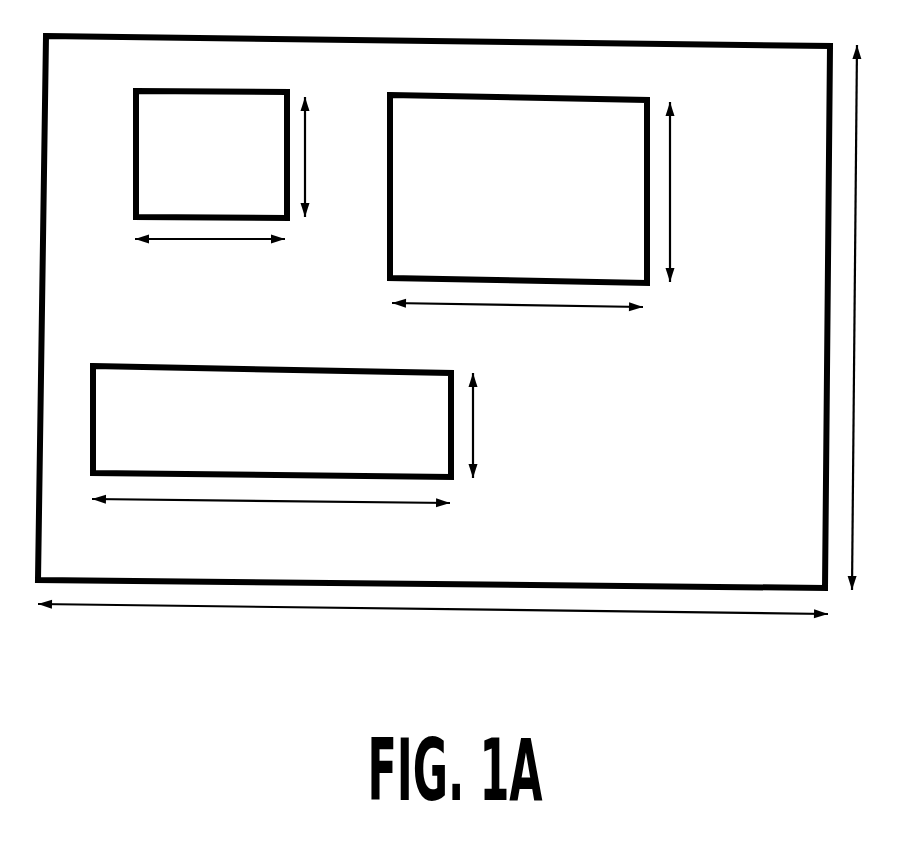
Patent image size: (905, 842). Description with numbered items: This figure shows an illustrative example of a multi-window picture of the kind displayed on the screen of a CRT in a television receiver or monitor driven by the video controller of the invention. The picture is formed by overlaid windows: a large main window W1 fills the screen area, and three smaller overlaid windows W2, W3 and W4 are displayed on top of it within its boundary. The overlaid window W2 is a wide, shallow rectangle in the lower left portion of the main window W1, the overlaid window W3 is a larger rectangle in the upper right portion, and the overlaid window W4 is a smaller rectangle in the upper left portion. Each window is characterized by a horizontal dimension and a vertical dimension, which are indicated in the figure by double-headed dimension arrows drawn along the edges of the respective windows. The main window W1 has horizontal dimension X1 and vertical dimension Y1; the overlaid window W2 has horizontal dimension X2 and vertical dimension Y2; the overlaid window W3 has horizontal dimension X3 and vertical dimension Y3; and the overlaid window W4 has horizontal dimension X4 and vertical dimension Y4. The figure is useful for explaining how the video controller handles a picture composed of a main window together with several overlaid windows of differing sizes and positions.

The main window W1 is at (434, 312).
The overlaid window W2 is at (272, 421).
The overlaid window W3 is at (518, 189).
The overlaid window W4 is at (211, 154).
The horizontal dimension X1 is at (433, 627).
The vertical dimension Y1 is at (870, 317).
The horizontal dimension X2 is at (271, 521).
The vertical dimension Y2 is at (491, 425).
The horizontal dimension X3 is at (517, 326).
The vertical dimension Y3 is at (688, 192).
The horizontal dimension X4 is at (210, 261).
The vertical dimension Y4 is at (320, 157).